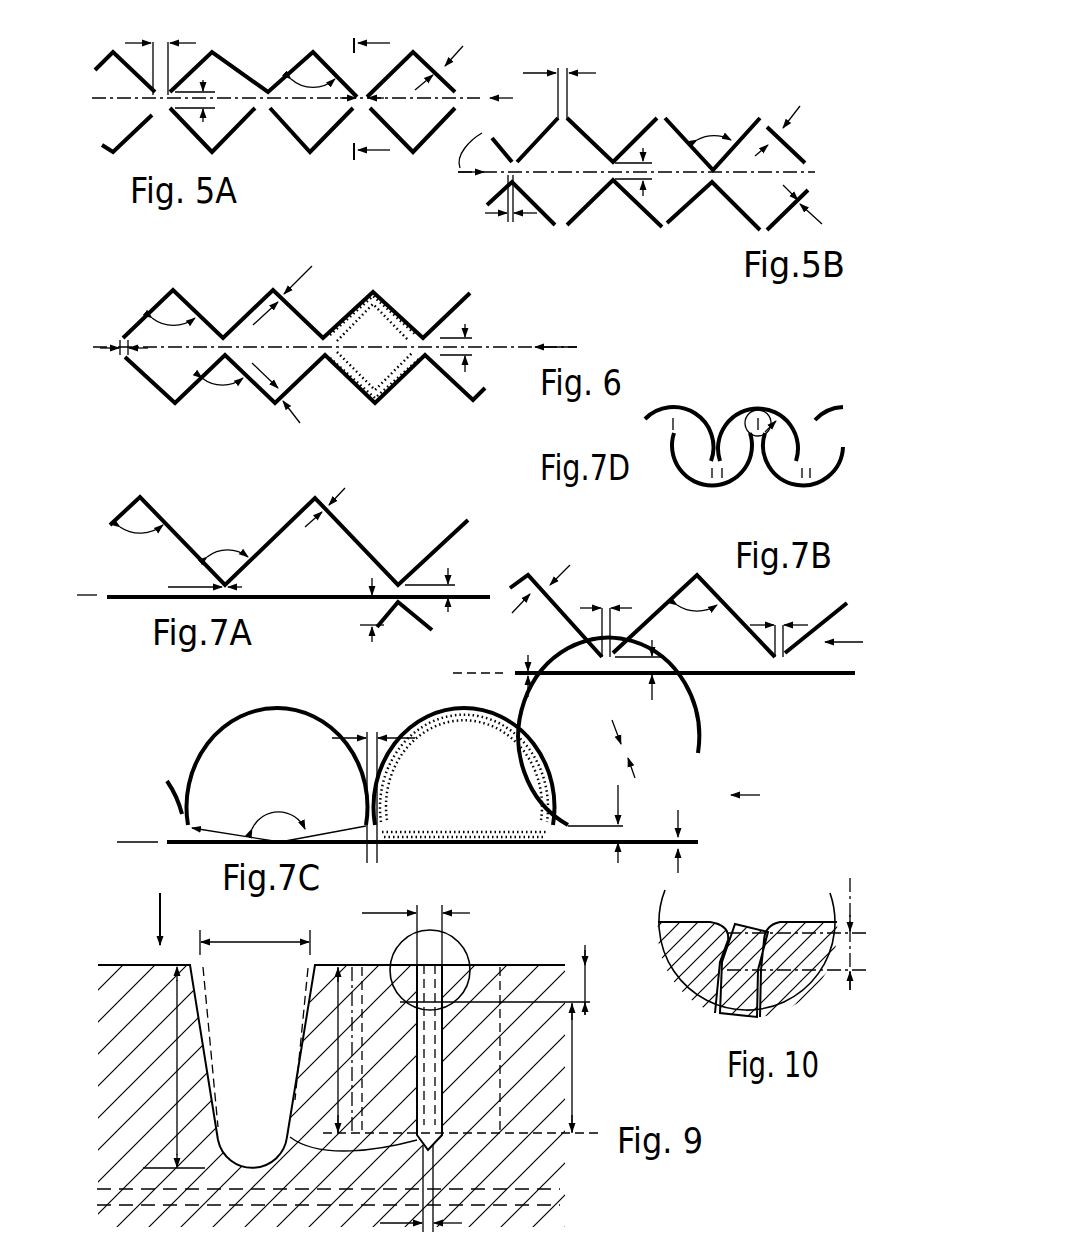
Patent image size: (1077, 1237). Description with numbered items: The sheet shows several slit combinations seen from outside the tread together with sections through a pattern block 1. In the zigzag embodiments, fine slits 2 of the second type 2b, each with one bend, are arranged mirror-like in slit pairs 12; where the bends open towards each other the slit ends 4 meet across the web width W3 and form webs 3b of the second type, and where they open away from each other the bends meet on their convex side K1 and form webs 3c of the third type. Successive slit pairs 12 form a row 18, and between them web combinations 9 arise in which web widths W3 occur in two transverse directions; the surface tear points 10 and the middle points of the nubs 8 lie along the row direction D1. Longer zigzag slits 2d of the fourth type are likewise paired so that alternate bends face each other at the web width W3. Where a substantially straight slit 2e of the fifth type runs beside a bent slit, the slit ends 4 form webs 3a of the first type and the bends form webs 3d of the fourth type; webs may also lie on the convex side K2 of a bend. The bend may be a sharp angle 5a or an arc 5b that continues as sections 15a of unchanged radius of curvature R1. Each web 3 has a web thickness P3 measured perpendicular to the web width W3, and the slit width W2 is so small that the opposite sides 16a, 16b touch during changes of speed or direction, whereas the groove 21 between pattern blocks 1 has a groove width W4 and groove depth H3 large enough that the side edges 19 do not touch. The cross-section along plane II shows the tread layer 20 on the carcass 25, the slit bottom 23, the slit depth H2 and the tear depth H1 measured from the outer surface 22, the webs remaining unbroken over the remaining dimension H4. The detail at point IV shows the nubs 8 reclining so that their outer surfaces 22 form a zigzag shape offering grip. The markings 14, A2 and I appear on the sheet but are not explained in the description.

In FIG. 9, the pattern block 1 is at (140, 978).
In FIG. 9, the slit 2 is at (442, 1147).
In FIG. 10, the slit 2 is at (757, 1020).
In FIG. 5A, the slit of the second type 2b is at (237, 70).
In FIG. 5B, the slit of the second type 2b is at (636, 125).
In FIG. 7B, the slit of the second type 2b is at (657, 605).
In FIG. 7D, the slit of the second type 2b is at (797, 462).
In FIG. 7C, the slit of the second type 2b is at (582, 782).
In FIG. 6, the slit of the fourth type 2d is at (400, 313).
In FIG. 7A, the slit of the fourth type 2d is at (176, 528).
In FIG. 7A, the slit of the fifth type 2e is at (318, 600).
In FIG. 7B, the slit of the fifth type 2e is at (690, 676).
In FIG. 7C, the slit of the fifth type 2e is at (455, 847).
In FIG. 9, the web 3 is at (428, 1152).
In FIG. 7A, the web of the first type 3a is at (398, 603).
In FIG. 7B, the web of the first type 3a is at (782, 672).
In FIG. 7D, the web of the first type 3a is at (760, 418).
In FIG. 7C, the web of the first type 3a is at (373, 843).
In FIG. 5A, the web of the second type 3b is at (153, 107).
In FIG. 5B, the web of the second type 3b is at (780, 65).
In FIG. 5B, the web of the third type 3c is at (510, 173).
In FIG. 6, the web of the third type 3c is at (226, 340).
In FIG. 7A, the web of the fourth type 3d is at (410, 630).
In FIG. 5A, the end of slit 4 is at (268, 91).
In FIG. 5B, the end of slit 4 is at (668, 118).
In FIG. 7B, the end of slit 4 is at (605, 662).
In FIG. 7C, the end of slit 4 is at (535, 832).
In FIG. 5A, the angle 5a is at (328, 35).
In FIG. 5B, the angle 5a is at (612, 158).
In FIG. 6, the angle 5a is at (372, 292).
In FIG. 7A, the angle 5a is at (315, 498).
In FIG. 7B, the angle 5a is at (525, 575).
In FIG. 7D, the angle 5a is at (652, 477).
In FIG. 7D, the arc 5b is at (688, 462).
In FIG. 7C, the arc 5b is at (507, 750).
In FIG. 5A, the nub 8 is at (124, 95).
In FIG. 5B, the nub 8 is at (572, 201).
In FIG. 6, the nub 8 is at (293, 343).
In FIG. 7A, the nub 8 is at (313, 569).
In FIG. 7B, the nub 8 is at (721, 666).
In FIG. 7D, the nub 8 is at (790, 463).
In FIG. 7C, the nub 8 is at (293, 781).
In FIG. 9, the nub 8 is at (478, 1076).
In FIG. 5A, the web combination 9 is at (368, 88).
In FIG. 7B, the web combination 9 is at (790, 642).
In FIG. 7C, the web combination 9 is at (562, 834).
In FIG. 5B, the surface tear point 10 is at (604, 172).
In FIG. 7A, the surface tear point 10 is at (395, 583).
In FIG. 7D, the surface tear point 10 is at (666, 420).
In FIG. 7C, the surface tear point 10 is at (184, 845).
In FIG. 9, the surface tear point 10 is at (440, 978).
In FIG. 10, the surface tear point 10 is at (720, 941).
In FIG. 5A, the slit pair 12 is at (229, 142).
In FIG. 5B, the slit pair 12 is at (582, 224).
In FIG. 6, the slit pair 12 is at (128, 388).
In FIG. 6, the filling 14 is at (365, 383).
In FIG. 7C, the filling 14 is at (430, 744).
In FIG. 7C, the section with unchanged radius of curvature 15a is at (238, 750).
In FIG. 9, the side of slit 16a is at (415, 1093).
In FIG. 10, the side of slit 16a is at (715, 957).
In FIG. 9, the side of slit 16b is at (442, 1108).
In FIG. 5A, the row 18 is at (512, 100).
In FIG. 5B, the row 18 is at (471, 152).
In FIG. 6, the row 18 is at (556, 334).
In FIG. 7A, the row 18 is at (110, 568).
In FIG. 7B, the row 18 is at (860, 643).
In FIG. 7C, the row 18 is at (762, 795).
In FIG. 9, the side edge of pattern block 19 is at (303, 1023).
In FIG. 9, the tread layer 20 is at (533, 987).
In FIG. 9, the groove 21 is at (273, 1060).
In FIG. 9, the outer surface of tread 22 is at (510, 962).
In FIG. 10, the outer surface of tread 22 is at (720, 916).
In FIG. 9, the bottom of slit 23 is at (290, 1135).
In FIG. 9, the carcass 25 is at (527, 1195).
In FIG. 5A, the slit width W2 is at (457, 61).
In FIG. 5B, the slit width W2 is at (808, 165).
In FIG. 6, the slit width W2 is at (285, 348).
In FIG. 7A, the slit width W2 is at (344, 560).
In FIG. 7B, the slit width W2 is at (537, 618).
In FIG. 7C, the slit width W2 is at (665, 792).
In FIG. 9, the slit width W2 is at (396, 932).
In FIG. 5A, the web width W3 is at (187, 69).
In FIG. 5B, the web width W3 is at (606, 124).
In FIG. 6, the web width W3 is at (473, 337).
In FIG. 7A, the web width W3 is at (445, 581).
In FIG. 7B, the web width W3 is at (634, 672).
In FIG. 7C, the web width W3 is at (495, 785).
In FIG. 9, the web width W3 is at (397, 1188).
In FIG. 9, the groove width W4 is at (255, 936).
In FIG. 5A, the web thickness P3 is at (380, 114).
In FIG. 5B, the web thickness P3 is at (511, 213).
In FIG. 6, the web thickness P3 is at (139, 360).
In FIG. 7A, the web thickness P3 is at (205, 575).
In FIG. 7B, the web thickness P3 is at (694, 617).
In FIG. 5A, the row direction D1 is at (456, 93).
In FIG. 5B, the row direction D1 is at (795, 172).
In FIG. 6, the row direction D1 is at (503, 345).
In FIG. 7A, the row direction D1 is at (88, 606).
In FIG. 7B, the row direction D1 is at (495, 678).
In FIG. 7C, the row direction D1 is at (140, 840).
In FIG. 9, the tear depth H1 is at (510, 980).
In FIG. 10, the tear depth H1 is at (798, 919).
In FIG. 9, the slit depth H2 is at (320, 1050).
In FIG. 9, the groove depth H3 is at (171, 1067).
In FIG. 9, the remaining slit dimension H4 is at (591, 1068).
In FIG. 5B, the convex side of bend K1 is at (697, 137).
In FIG. 7D, the convex side of bend K2 is at (720, 477).
In FIG. 7C, the radius of curvature R1 is at (279, 824).
In FIG. 7C, the area A2 is at (229, 784).
In FIG. 9, the section I is at (167, 919).
In FIG. 5A, the section plane II is at (372, 99).
In FIG. 9, the detail point IV is at (464, 936).